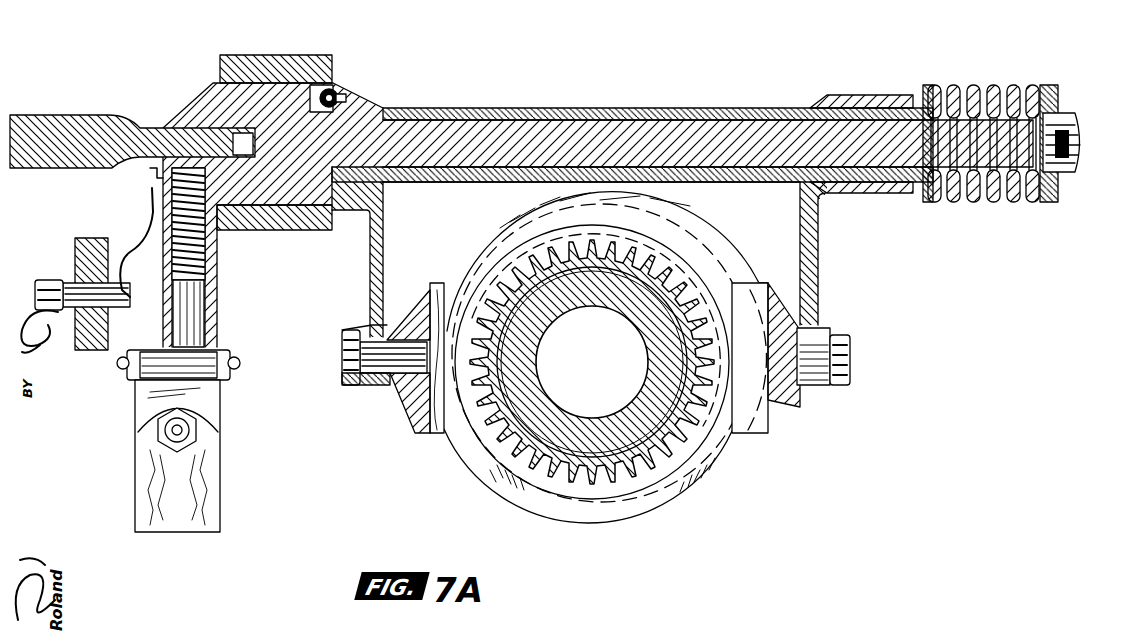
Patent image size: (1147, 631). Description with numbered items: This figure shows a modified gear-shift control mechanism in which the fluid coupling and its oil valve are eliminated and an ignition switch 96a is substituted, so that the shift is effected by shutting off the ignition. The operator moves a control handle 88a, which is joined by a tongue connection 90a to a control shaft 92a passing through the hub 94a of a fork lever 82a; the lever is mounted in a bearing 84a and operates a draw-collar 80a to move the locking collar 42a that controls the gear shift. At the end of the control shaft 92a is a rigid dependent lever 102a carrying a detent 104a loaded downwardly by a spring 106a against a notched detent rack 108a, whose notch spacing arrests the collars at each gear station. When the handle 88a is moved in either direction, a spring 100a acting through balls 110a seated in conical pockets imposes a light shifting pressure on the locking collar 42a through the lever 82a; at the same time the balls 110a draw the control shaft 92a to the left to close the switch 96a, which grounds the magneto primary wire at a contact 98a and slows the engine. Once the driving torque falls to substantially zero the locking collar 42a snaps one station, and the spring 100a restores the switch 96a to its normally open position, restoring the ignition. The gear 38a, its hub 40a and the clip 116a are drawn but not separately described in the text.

The gear 38a is at (642, 288).
The gear hub 40a is at (668, 290).
The locking collar 42a is at (697, 478).
The draw-collar 80a is at (798, 405).
The fork lever 82a is at (384, 232).
The bearing 84a is at (232, 56).
The control handle 88a is at (55, 116).
The tongue connection 90a is at (182, 130).
The control shaft 92a is at (292, 92).
The lever hub 94a is at (470, 108).
The ignition switch 96a is at (150, 203).
The contact 98a is at (158, 182).
The spring 100a is at (988, 88).
The dependent lever 102a is at (212, 277).
The detent 104a is at (218, 350).
The spring 106a is at (206, 245).
The detent rack 108a is at (215, 410).
The balls 110a is at (342, 94).
The clip 116a is at (30, 355).